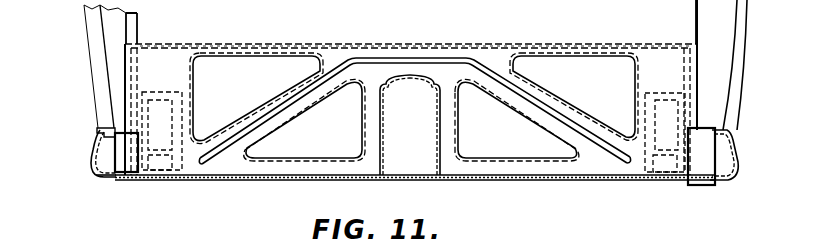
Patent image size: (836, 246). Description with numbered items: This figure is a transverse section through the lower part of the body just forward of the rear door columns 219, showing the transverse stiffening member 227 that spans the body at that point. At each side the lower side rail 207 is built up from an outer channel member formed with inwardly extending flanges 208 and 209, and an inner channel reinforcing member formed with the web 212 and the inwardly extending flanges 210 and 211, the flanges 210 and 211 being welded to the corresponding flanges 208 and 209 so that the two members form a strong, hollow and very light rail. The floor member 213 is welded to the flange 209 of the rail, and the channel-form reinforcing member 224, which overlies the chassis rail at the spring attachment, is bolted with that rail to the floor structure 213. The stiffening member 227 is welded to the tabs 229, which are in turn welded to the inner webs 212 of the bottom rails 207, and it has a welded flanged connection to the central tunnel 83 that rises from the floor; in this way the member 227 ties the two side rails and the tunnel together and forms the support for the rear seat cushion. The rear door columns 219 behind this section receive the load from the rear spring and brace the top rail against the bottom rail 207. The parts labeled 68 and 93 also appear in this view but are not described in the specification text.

The rear door column 219 is at (139, 26).
The inwardly extending flange 210 is at (120, 118).
The inwardly extending flange 208 is at (97, 130).
The lower side rail 207 is at (90, 155).
The web 212 is at (116, 156).
The inwardly extending flange 209 is at (108, 178).
The inwardly extending flange 211 is at (118, 178).
The bottom flange 68 is at (180, 183).
The floor member 213 is at (411, 87).
The reinforcing member 224 is at (187, 98).
The arch left 93 is at (380, 88).
The tunnel 83 is at (437, 93).
The transverse stiffening member 227 is at (552, 44).
The tabs 229 is at (703, 157).